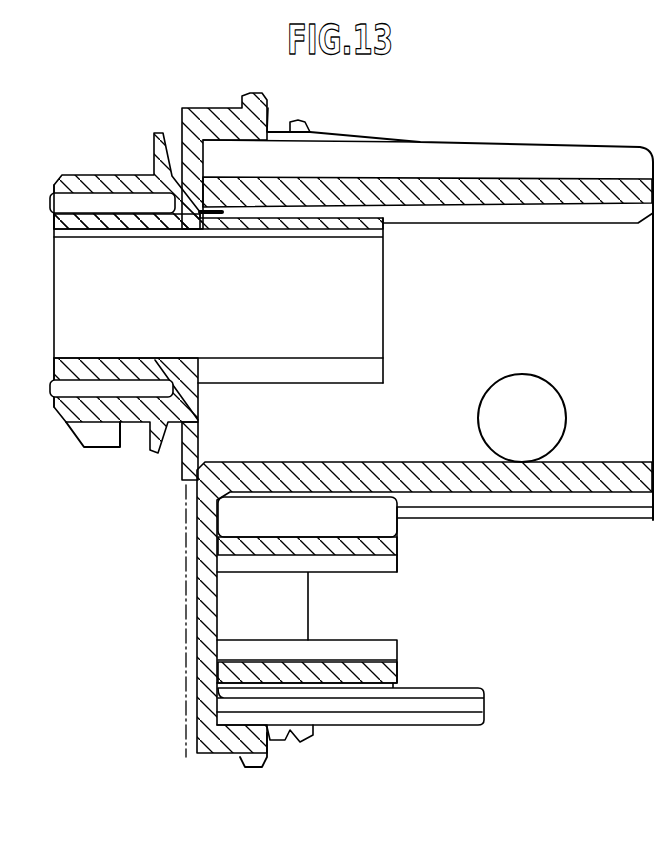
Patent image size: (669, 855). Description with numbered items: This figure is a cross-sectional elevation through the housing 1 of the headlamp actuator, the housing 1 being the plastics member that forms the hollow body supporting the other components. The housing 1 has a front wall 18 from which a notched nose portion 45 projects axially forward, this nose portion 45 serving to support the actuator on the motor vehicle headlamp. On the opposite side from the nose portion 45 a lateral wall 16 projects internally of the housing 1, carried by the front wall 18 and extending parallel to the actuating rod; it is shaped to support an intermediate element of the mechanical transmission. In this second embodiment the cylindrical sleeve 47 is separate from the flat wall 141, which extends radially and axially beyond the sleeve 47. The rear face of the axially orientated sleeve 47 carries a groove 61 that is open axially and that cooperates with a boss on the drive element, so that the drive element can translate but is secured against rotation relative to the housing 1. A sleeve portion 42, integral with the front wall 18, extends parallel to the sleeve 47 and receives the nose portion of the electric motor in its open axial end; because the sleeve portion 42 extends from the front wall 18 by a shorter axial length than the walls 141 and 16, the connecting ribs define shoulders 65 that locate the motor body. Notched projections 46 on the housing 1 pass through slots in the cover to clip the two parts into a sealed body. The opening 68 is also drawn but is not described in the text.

The housing 1 is at (193, 638).
The lateral wall 16 is at (599, 328).
The front wall 18 is at (182, 450).
The sleeve portion 42 is at (397, 548).
The nose portion 45 is at (76, 424).
The notched projections 46 is at (264, 768).
The cylindrical sleeve 47 is at (386, 237).
The groove 61 is at (232, 368).
The shoulders 65 is at (397, 664).
The opening 68 is at (525, 462).
The wall 141 is at (463, 178).